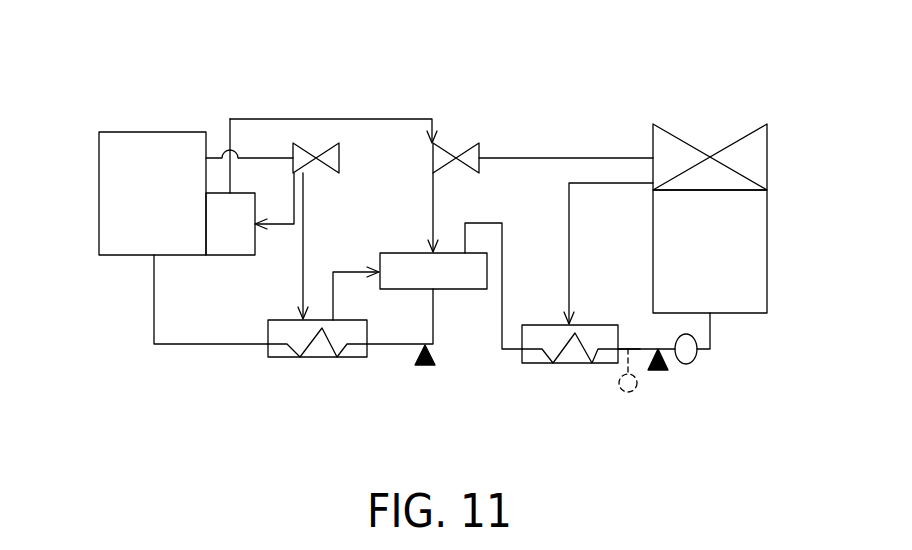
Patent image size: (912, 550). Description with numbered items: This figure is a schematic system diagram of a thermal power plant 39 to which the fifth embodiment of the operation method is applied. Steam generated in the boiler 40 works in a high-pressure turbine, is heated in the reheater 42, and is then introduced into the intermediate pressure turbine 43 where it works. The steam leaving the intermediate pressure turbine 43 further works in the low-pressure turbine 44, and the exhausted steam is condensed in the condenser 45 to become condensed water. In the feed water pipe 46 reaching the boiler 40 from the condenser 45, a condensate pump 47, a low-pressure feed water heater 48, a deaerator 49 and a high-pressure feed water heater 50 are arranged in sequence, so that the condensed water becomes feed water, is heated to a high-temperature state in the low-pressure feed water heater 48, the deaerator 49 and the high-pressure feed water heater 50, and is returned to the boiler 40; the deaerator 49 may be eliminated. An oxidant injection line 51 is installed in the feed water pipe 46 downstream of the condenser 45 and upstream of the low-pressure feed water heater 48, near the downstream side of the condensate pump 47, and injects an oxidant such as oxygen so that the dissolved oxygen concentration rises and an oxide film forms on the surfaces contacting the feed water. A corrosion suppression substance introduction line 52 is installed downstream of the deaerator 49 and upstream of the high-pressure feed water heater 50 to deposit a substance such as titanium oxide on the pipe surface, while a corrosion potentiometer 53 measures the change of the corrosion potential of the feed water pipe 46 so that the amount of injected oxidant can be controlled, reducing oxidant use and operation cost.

The thermal power plant 39 is at (566, 86).
The boiler 40 is at (99, 193).
The reheater 42 is at (230, 255).
The intermediate pressure turbine 43 is at (473, 173).
The low-pressure turbine 44 is at (767, 160).
The condenser 45 is at (767, 255).
The feed water pipe 46 is at (638, 350).
The condensate pump 47 is at (686, 364).
The low-pressure feed water heater 48 is at (570, 363).
The deaerator 49 is at (462, 289).
The high-pressure feed water heater 50 is at (317, 357).
The oxidant injection line 51 is at (658, 370).
The corrosion suppression substance introduction line 52 is at (425, 365).
The corrosion potentiometer 53 is at (627, 392).